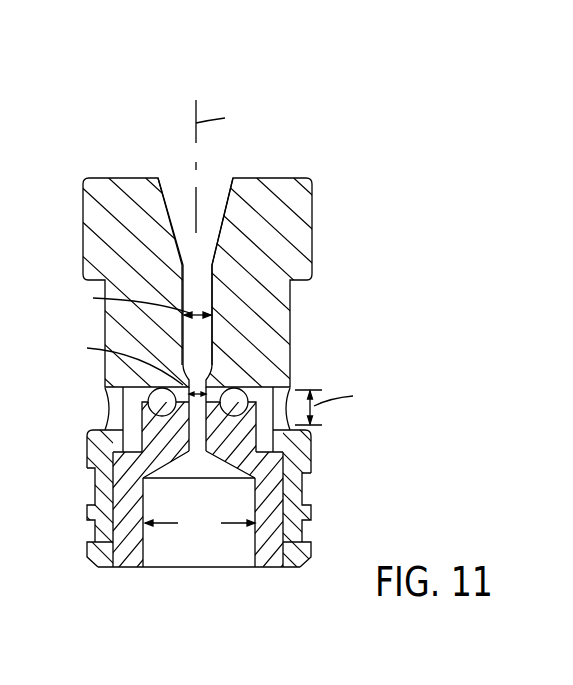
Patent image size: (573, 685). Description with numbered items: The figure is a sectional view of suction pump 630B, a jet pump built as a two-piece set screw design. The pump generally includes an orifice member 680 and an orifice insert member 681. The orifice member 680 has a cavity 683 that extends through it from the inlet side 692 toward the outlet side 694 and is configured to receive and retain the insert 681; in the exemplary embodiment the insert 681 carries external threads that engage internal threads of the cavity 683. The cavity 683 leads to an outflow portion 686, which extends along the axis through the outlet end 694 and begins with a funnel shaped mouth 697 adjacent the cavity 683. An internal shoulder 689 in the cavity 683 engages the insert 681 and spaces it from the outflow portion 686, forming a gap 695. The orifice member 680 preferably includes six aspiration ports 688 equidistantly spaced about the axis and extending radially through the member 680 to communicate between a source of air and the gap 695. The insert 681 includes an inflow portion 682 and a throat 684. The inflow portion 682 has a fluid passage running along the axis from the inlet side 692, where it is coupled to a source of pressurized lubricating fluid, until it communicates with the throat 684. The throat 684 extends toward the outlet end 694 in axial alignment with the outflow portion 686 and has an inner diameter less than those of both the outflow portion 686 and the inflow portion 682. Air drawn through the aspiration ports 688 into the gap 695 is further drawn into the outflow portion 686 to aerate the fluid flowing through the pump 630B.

The suction pump 630B is at (286, 159).
The outlet side 694 is at (308, 84).
The orifice member 680 is at (313, 272).
The outflow portion 686 is at (177, 217).
The aspiration ports 688 is at (113, 410).
The gap 695 is at (257, 398).
The funnel shaped mouth 697 is at (204, 384).
The internal shoulder 689 is at (312, 447).
The cavity 683 is at (290, 495).
The inflow portion 682 is at (145, 532).
The orifice insert member 681 is at (270, 543).
The throat 684 is at (207, 430).
The inlet side 692 is at (229, 594).